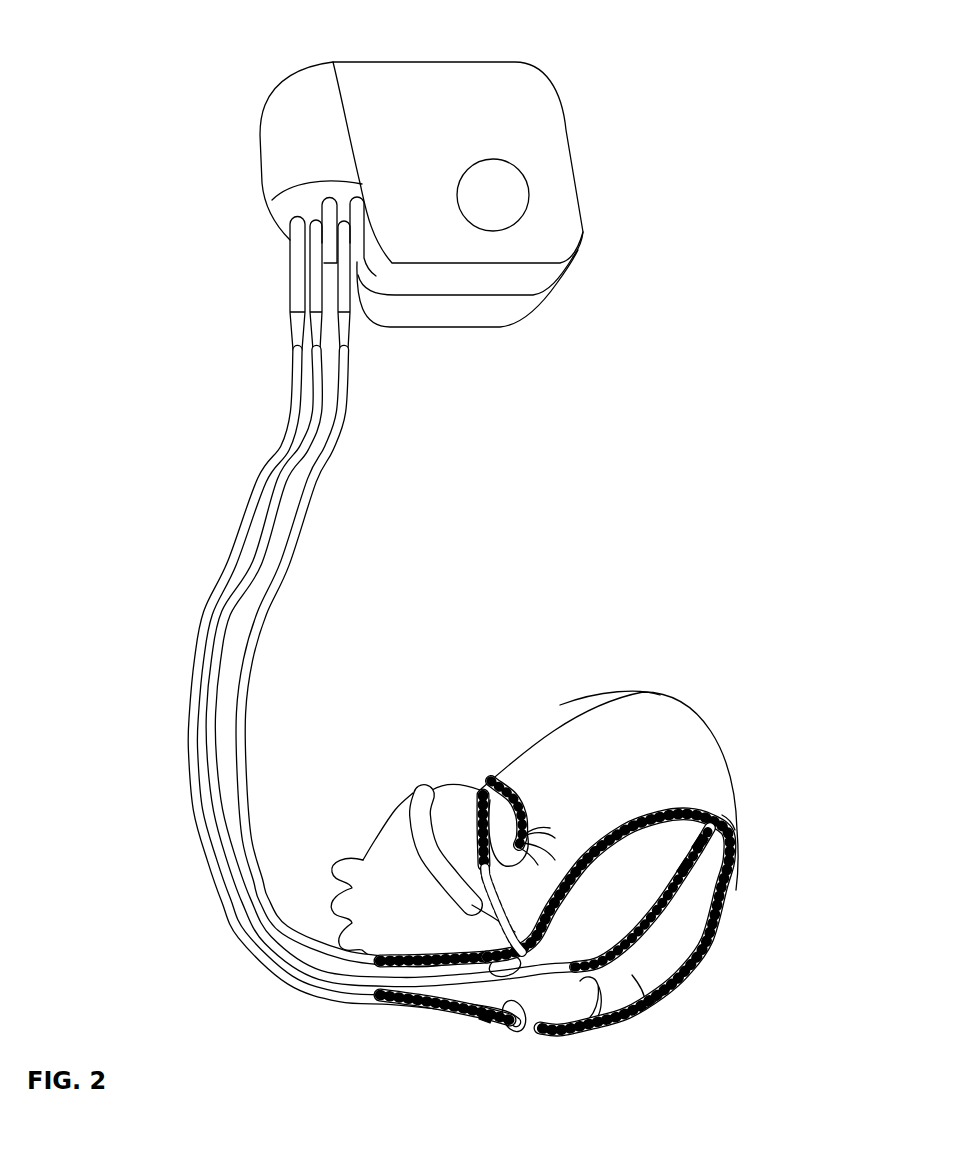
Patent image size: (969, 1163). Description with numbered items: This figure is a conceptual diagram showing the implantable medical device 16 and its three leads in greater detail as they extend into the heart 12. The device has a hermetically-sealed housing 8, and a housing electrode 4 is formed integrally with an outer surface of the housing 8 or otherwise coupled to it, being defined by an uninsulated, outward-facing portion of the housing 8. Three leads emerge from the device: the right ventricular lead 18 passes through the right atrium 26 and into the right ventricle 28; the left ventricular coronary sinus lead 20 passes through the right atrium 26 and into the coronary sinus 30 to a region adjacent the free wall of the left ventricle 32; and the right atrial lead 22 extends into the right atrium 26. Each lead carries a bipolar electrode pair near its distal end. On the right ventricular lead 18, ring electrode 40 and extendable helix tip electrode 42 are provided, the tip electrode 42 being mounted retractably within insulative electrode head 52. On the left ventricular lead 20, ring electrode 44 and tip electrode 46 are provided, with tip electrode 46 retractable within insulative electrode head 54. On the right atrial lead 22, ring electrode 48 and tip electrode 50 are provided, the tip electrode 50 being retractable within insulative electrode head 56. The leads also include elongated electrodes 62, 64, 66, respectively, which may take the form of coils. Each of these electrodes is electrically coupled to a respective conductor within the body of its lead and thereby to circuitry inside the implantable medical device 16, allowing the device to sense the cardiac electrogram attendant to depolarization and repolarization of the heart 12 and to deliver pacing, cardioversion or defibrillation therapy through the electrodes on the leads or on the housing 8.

The implantable medical device 16 is at (428, 50).
The housing electrode 4 is at (500, 197).
The housing 8 is at (573, 227).
The right ventricular lead 18 is at (337, 448).
The left ventricular coronary sinus lead 20 is at (257, 483).
The right atrial lead 22 is at (290, 417).
The heart 12 is at (711, 695).
The left ventricle 32 is at (622, 722).
The elongated electrode 64 is at (465, 792).
The ring electrode 44 is at (510, 783).
The insulative electrode head 54 is at (522, 812).
The extendable helix tip electrode 46 is at (530, 830).
The extendable helix tip electrode 42 is at (737, 833).
The insulative electrode head 52 is at (735, 828).
The ring electrode 40 is at (708, 845).
The coronary sinus 30 is at (485, 892).
The extendable helix tip electrode 50 is at (470, 958).
The elongated electrode 62 is at (695, 950).
The right ventricle 28 is at (655, 1003).
The right atrium 26 is at (563, 1013).
The ring electrode 48 is at (515, 1033).
The insulative electrode head 56 is at (487, 1027).
The elongated electrode 66 is at (420, 1010).